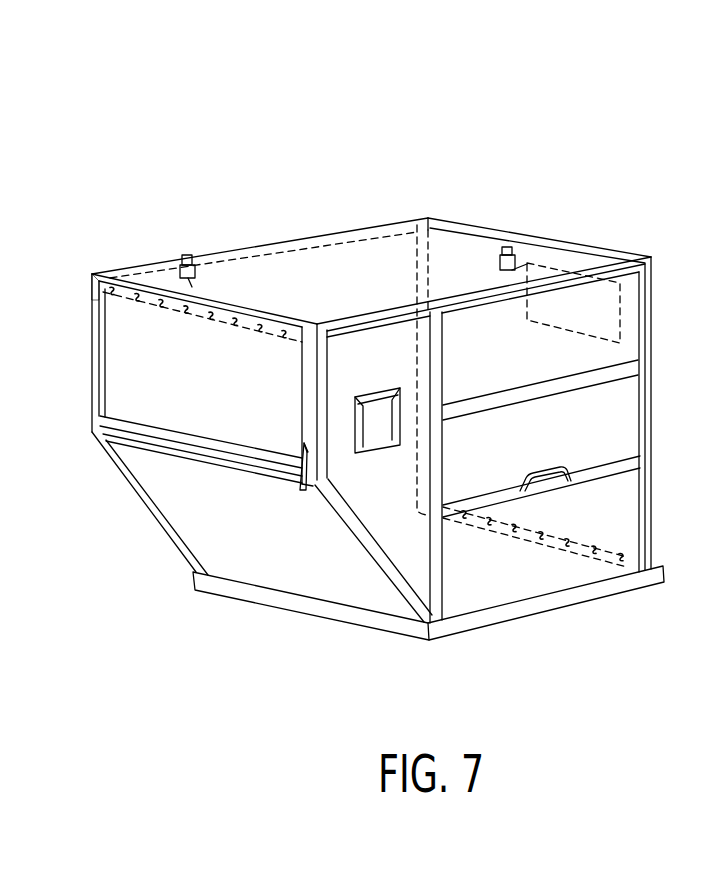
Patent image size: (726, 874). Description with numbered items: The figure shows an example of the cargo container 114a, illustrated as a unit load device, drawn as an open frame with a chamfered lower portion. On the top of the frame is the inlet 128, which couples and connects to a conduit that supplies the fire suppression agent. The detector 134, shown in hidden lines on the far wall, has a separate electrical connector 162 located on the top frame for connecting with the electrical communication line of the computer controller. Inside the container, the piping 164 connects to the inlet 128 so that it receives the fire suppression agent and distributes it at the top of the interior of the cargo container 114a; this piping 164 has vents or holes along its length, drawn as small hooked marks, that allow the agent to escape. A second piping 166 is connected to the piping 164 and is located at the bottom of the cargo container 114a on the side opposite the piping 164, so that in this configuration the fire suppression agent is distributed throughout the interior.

The cargo container 114a is at (132, 114).
The piping 164 is at (86, 275).
The inlet 128 is at (172, 266).
The electrical connector 162 is at (518, 250).
The detector 134 is at (622, 299).
The second piping 166 is at (632, 546).